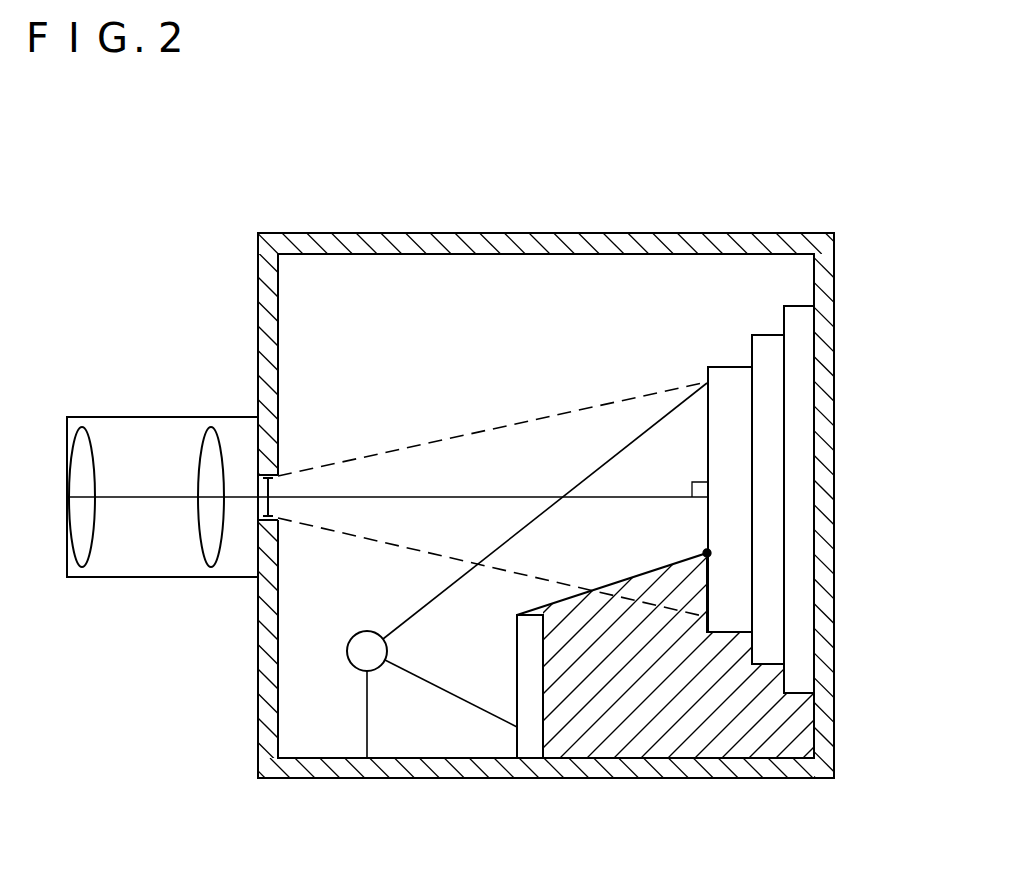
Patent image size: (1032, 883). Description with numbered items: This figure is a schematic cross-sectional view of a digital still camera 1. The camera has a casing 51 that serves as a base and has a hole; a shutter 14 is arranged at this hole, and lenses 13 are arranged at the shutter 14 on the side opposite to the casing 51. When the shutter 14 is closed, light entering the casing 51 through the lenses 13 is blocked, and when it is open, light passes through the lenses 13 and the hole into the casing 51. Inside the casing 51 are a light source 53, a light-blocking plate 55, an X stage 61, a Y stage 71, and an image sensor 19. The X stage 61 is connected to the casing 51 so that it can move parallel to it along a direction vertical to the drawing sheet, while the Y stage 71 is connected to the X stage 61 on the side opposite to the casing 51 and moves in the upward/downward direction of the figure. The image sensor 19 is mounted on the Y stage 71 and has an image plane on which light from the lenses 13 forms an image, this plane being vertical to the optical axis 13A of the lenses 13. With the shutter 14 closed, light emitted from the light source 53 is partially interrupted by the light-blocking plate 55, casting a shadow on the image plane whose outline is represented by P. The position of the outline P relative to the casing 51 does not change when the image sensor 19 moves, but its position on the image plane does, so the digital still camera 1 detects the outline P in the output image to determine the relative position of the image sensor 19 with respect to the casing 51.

The digital still camera 1 is at (105, 187).
The lenses 13 is at (128, 416).
The optical axis 13A is at (341, 497).
The shutter 14 is at (261, 488).
The image sensor 19 is at (708, 370).
The casing 51 is at (822, 637).
The light source 53 is at (357, 636).
The light-blocking plate 55 is at (533, 740).
The X stage 61 is at (792, 317).
The Y stage 71 is at (760, 342).
The outline of the shadow P is at (707, 553).